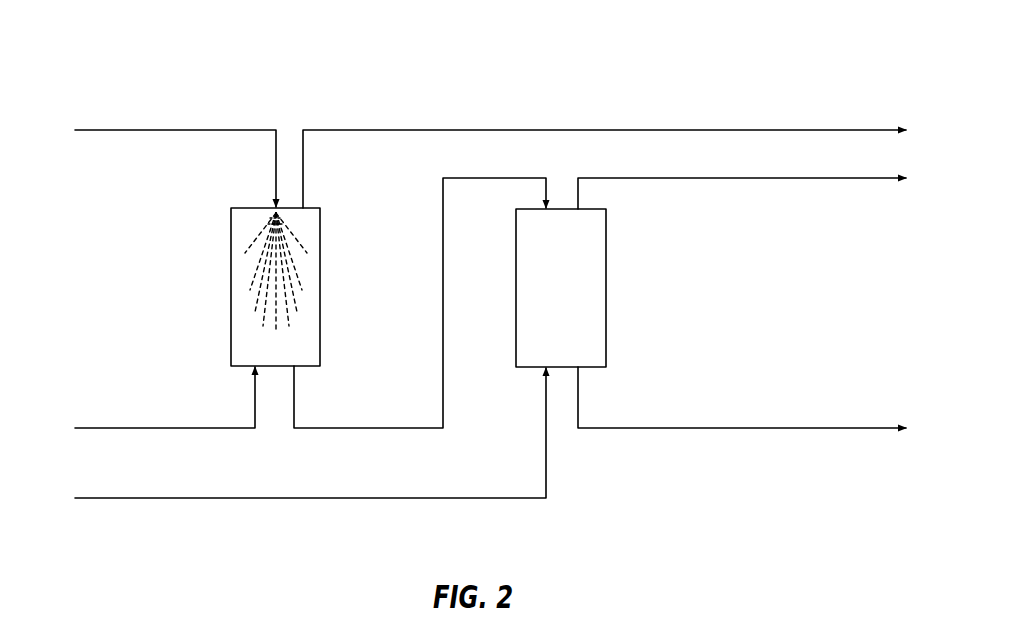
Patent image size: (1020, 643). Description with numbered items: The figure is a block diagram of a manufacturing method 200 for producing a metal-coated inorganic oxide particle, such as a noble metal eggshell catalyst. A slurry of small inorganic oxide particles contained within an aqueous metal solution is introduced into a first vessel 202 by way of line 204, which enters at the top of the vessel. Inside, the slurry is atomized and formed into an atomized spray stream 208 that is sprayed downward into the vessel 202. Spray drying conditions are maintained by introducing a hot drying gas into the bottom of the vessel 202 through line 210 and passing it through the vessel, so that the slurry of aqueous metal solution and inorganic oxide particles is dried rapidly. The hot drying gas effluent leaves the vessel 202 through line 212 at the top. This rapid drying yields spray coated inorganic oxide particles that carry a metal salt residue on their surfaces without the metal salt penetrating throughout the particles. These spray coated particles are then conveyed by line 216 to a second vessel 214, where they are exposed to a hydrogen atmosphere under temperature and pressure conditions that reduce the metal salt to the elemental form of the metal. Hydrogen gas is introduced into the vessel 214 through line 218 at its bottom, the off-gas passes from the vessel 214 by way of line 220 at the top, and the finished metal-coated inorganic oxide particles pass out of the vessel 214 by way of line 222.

The manufacturing method 200 is at (665, 70).
The vessel 202 is at (321, 289).
The line 204 is at (101, 130).
The atomized spray stream 208 is at (250, 292).
The line 210 is at (102, 428).
The line 212 is at (347, 130).
The vessel 214 is at (606, 288).
The line 216 is at (343, 428).
The line 218 is at (102, 498).
The line 220 is at (675, 178).
The line 222 is at (675, 428).